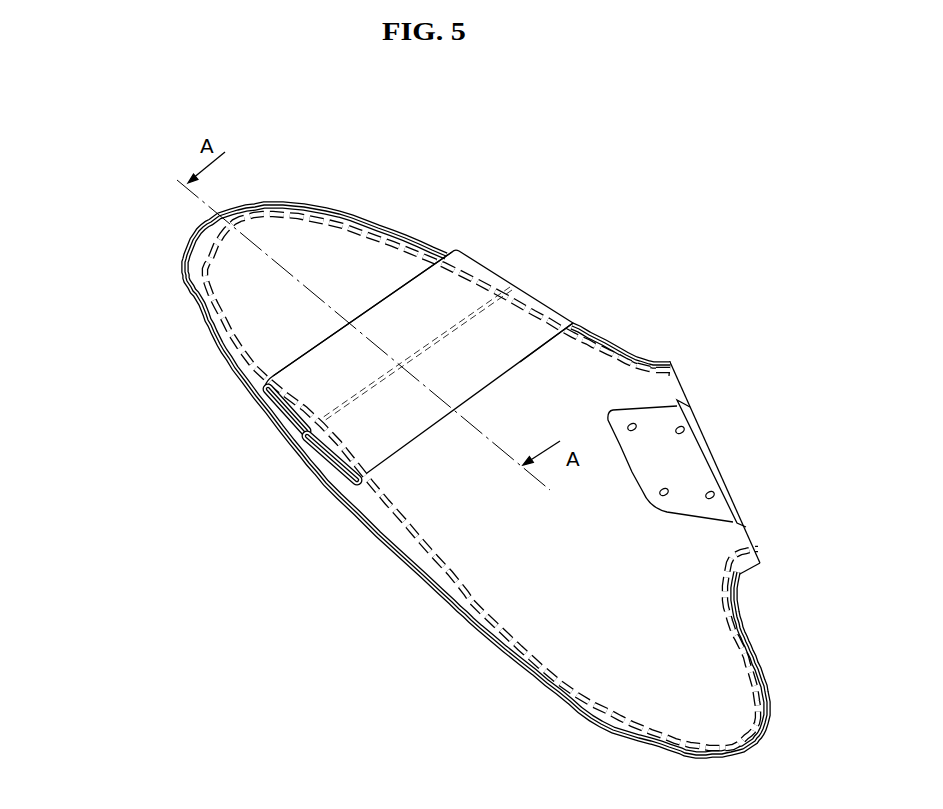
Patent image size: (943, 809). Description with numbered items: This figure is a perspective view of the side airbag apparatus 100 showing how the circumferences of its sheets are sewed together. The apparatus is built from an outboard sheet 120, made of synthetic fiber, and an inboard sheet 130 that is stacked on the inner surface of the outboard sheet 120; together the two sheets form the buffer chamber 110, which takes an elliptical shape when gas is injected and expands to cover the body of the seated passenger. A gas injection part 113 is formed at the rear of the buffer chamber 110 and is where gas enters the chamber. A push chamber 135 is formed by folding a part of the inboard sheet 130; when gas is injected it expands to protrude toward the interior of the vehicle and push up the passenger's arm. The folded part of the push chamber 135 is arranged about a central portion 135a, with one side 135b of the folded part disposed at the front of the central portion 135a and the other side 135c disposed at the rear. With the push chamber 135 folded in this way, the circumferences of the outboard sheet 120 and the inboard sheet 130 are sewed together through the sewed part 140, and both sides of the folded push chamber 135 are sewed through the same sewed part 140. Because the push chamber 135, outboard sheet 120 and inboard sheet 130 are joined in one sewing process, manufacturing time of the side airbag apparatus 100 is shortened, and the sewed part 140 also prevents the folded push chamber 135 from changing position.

The side airbag apparatus 100 is at (708, 141).
The buffer chamber 110 is at (127, 295).
The gas injection part 113 is at (688, 393).
The outboard sheet 120 is at (207, 347).
The inboard sheet 130 is at (257, 300).
The push chamber 135 is at (474, 320).
The central portion 135a is at (486, 298).
The one side of the folded part 135b is at (390, 291).
The other side of the folded part 135c is at (540, 356).
The sewed part 140 is at (458, 580).